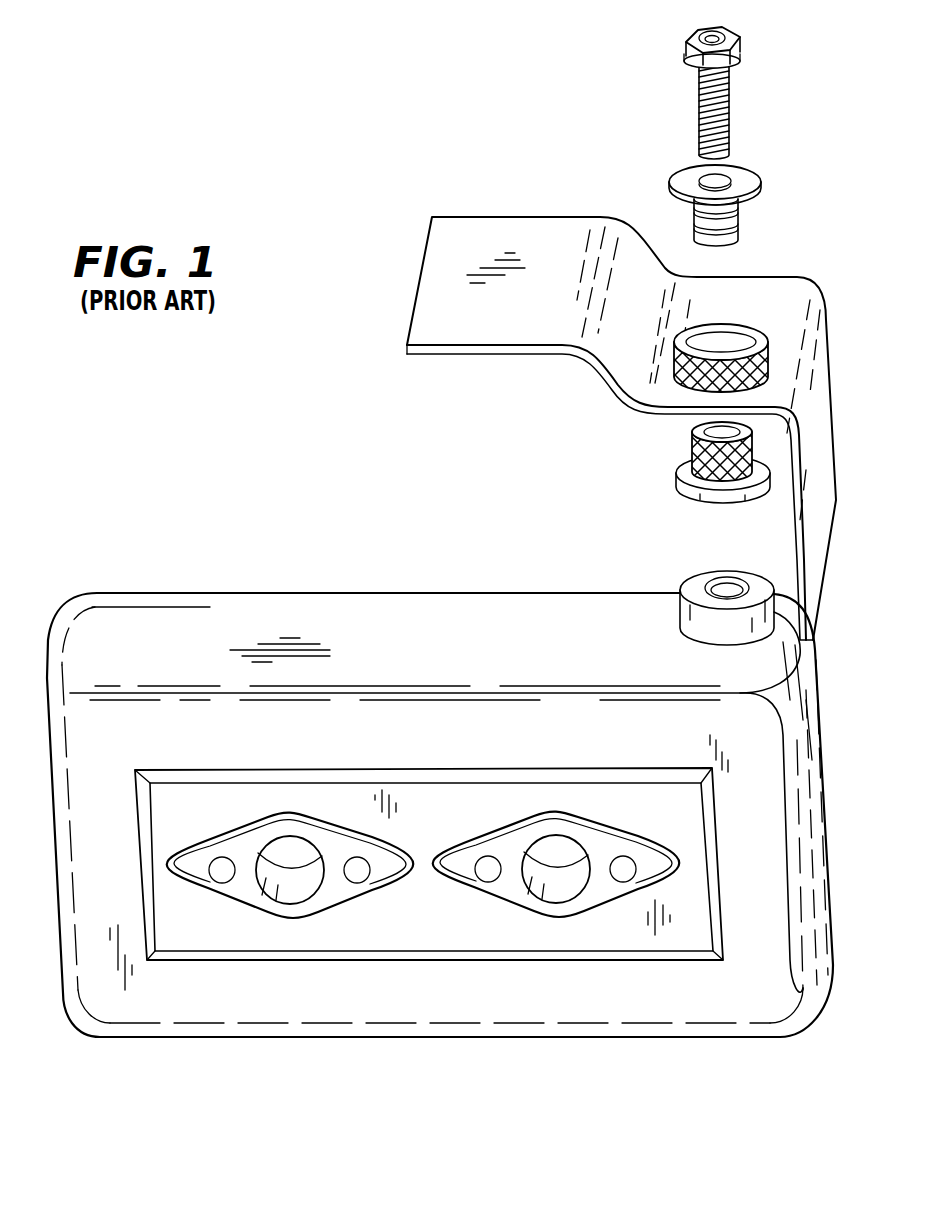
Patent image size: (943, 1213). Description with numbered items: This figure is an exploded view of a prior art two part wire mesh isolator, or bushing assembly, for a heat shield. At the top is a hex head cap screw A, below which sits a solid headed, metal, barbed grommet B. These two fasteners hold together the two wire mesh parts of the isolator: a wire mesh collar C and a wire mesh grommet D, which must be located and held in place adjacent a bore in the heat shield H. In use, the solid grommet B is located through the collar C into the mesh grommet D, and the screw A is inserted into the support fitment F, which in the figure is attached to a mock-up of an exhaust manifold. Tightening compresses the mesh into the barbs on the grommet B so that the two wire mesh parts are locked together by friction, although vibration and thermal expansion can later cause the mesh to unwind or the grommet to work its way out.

The hex head cap screw A is at (752, 82).
The barbed grommet B is at (773, 200).
The wire mesh collar C is at (762, 323).
The wire mesh grommet D is at (763, 440).
The support fitment F is at (683, 577).
The heat shield H is at (485, 212).